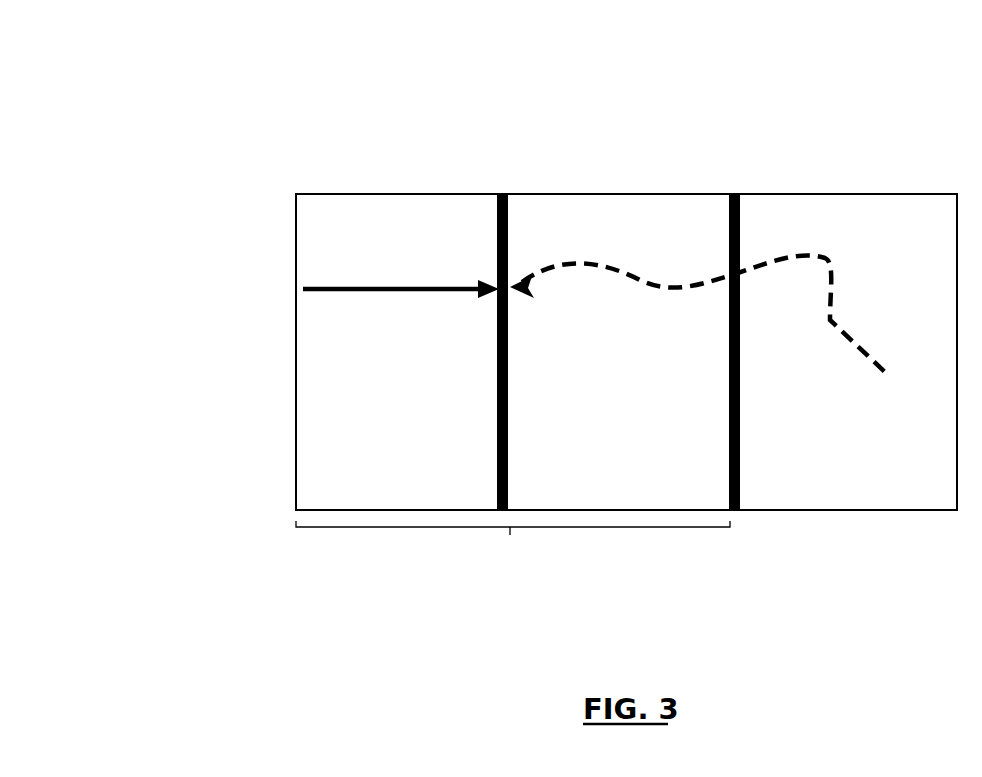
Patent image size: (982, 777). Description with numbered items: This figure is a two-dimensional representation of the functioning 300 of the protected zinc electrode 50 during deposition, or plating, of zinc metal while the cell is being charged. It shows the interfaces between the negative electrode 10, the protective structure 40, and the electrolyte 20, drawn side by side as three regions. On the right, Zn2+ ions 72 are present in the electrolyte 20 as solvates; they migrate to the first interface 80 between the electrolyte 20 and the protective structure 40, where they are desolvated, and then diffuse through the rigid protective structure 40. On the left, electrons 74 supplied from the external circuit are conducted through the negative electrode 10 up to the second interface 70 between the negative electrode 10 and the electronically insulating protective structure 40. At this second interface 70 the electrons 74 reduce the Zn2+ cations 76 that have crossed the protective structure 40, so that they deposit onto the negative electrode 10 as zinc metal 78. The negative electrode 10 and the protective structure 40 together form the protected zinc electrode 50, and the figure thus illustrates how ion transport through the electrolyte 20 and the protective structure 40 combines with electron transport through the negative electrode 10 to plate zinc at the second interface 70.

The functioning of the protected zinc electrode 300 is at (82, 38).
The negative electrode 10 is at (361, 193).
The second interface 70 is at (500, 193).
The protective structure 40 is at (619, 193).
The first interface 80 is at (733, 193).
The electrolyte 20 is at (850, 193).
The electrons 74 is at (366, 260).
The zinc ions in the protective structure 76 is at (596, 374).
The zinc metal 78 is at (389, 450).
The zinc ions in the electrolyte 72 is at (847, 451).
The protected zinc electrode 50 is at (513, 543).